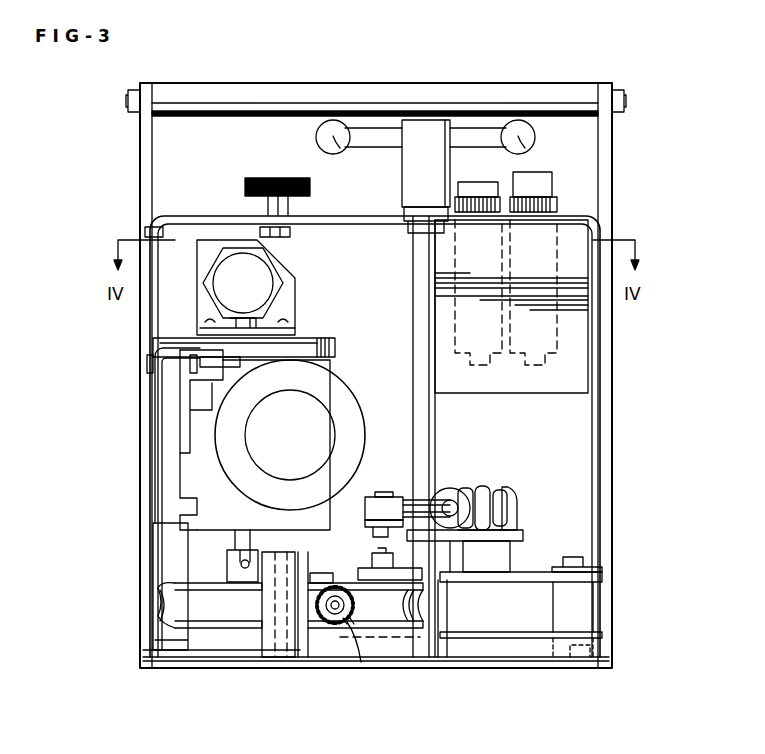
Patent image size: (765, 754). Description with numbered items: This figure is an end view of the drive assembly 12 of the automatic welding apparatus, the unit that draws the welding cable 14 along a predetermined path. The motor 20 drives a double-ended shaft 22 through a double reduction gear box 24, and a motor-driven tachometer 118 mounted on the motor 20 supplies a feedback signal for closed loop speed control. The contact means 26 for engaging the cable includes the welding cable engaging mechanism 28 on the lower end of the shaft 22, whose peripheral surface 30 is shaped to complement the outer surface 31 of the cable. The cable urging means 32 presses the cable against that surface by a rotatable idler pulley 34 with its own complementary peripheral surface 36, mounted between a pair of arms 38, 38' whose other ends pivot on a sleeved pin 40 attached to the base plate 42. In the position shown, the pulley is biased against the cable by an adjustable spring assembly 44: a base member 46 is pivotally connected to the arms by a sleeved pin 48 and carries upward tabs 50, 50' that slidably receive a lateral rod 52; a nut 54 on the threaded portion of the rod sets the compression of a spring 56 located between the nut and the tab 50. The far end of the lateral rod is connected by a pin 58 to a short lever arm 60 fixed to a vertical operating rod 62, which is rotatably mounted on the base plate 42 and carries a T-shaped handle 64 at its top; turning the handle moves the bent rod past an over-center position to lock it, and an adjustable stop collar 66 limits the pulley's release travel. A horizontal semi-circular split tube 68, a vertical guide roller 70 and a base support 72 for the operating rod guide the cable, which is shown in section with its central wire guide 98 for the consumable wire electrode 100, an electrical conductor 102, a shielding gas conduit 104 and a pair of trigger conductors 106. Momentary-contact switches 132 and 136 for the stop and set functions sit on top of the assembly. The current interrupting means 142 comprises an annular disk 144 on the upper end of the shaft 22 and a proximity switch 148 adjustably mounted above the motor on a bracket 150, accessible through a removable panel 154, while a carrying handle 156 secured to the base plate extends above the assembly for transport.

The drive assembly 12 is at (634, 412).
The welding cable 14 is at (302, 618).
The motor 20 is at (303, 502).
The driven shaft 22 is at (238, 546).
The double reduction gear box 24 is at (206, 468).
The contact means 26 is at (331, 570).
The welding cable engaging mechanism 28 is at (184, 601).
The peripheral surface 30 is at (344, 620).
The outer surface 31 is at (324, 588).
The cable urging means 32 is at (562, 538).
The idler pulley 34 is at (392, 620).
The peripheral surface 36 is at (354, 604).
The arm 38 is at (596, 606).
The arm 38' is at (546, 629).
The sleeved pin 40 is at (585, 562).
The base plate 42 is at (524, 663).
The adjustable spring assembly 44 is at (500, 462).
The base member 46 is at (518, 535).
The sleeved pin 48 is at (500, 560).
The tab 50 is at (473, 484).
The tab 50' is at (531, 508).
The lateral rod 52 is at (424, 504).
The nut 54 is at (496, 500).
The spring 56 is at (484, 494).
The pin 58 is at (378, 492).
The short lever arm 60 is at (375, 522).
The operating rod 62 is at (422, 288).
The T-shaped handle 64 is at (384, 146).
The adjustable stop collar 66 is at (448, 492).
The semi-circular split tube 68 is at (334, 650).
The guide roller 70 is at (262, 635).
The base support 72 is at (436, 650).
The guide 98 is at (346, 619).
The consumable wire electrode 100 is at (346, 622).
The electrical conductor 102 is at (382, 566).
The conduit 104 is at (356, 624).
The conductors 106 is at (325, 600).
The tachometer 118 is at (308, 442).
The momentary-contact switch 132 is at (477, 183).
The momentary-contact switch 136 is at (535, 175).
The current interrupting means 142 is at (286, 287).
The annular disk 144 is at (346, 348).
The proximity switch 148 is at (260, 295).
The bracket 150 is at (178, 339).
The removable panel 154 is at (212, 224).
The carrying handle 156 is at (430, 86).